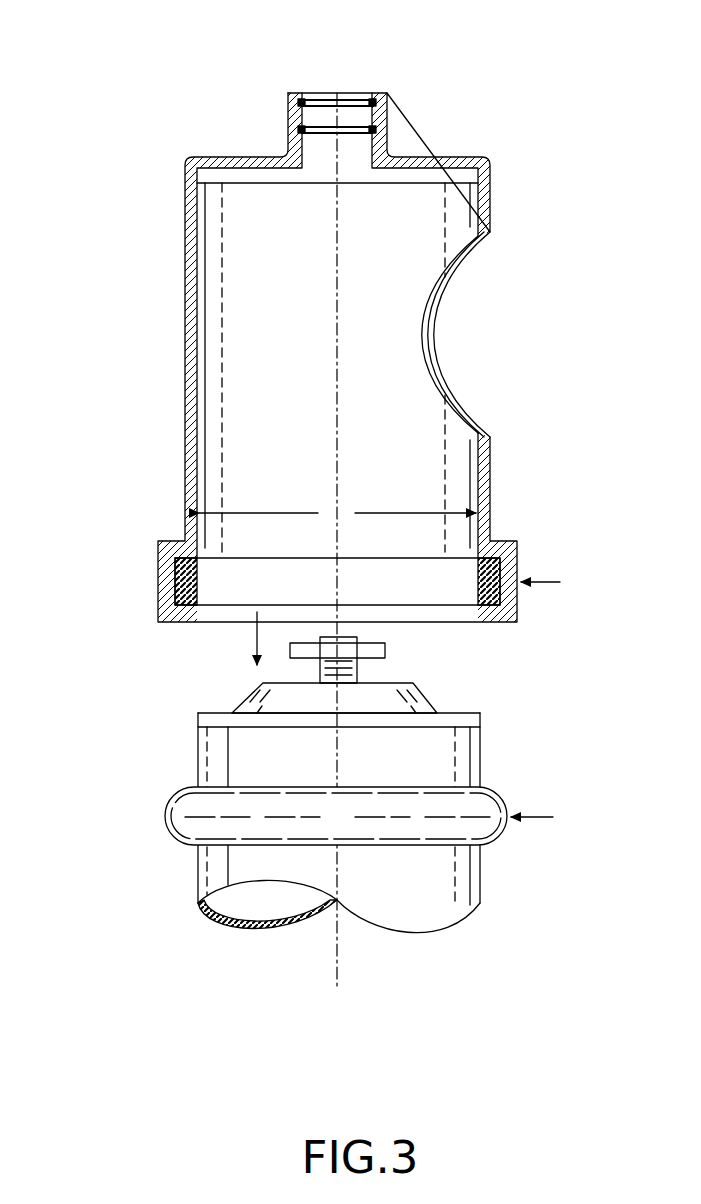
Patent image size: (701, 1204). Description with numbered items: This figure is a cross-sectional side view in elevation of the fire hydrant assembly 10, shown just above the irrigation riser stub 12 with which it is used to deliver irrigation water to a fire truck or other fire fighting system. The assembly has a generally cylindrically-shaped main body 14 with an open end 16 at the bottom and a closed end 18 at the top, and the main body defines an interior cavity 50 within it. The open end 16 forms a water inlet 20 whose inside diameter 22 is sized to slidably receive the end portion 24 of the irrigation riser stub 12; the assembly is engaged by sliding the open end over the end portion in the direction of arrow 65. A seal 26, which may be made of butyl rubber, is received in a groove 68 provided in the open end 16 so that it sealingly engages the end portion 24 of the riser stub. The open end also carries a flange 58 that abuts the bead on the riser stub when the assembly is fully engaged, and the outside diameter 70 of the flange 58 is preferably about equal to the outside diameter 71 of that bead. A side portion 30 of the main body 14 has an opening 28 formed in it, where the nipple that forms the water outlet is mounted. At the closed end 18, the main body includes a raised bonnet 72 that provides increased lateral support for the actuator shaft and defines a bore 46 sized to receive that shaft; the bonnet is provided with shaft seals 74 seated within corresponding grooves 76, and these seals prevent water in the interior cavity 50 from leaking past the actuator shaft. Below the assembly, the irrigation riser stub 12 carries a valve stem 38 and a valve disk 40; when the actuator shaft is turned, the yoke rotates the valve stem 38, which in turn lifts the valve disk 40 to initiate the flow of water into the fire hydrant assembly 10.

The fire hydrant assembly 10 is at (321, 528).
The irrigation riser stub 12 is at (255, 934).
The main body 14 is at (185, 268).
The open end 16 is at (517, 615).
The closed end 18 is at (236, 157).
The water inlet 20 is at (220, 625).
The inside diameter 22 is at (337, 513).
The end portion 24 is at (481, 757).
The seal 26 is at (478, 580).
The opening 28 is at (438, 335).
The side portion 30 is at (483, 213).
The valve stem 38 is at (385, 650).
The valve disk 40 is at (427, 698).
The bore 46 is at (366, 162).
The interior cavity 50 is at (337, 362).
The flange 58 is at (178, 541).
The arrow 65 is at (254, 641).
The groove 68 is at (503, 565).
The outside diameter 70 is at (154, 582).
The outside diameter 71 is at (161, 817).
The raised bonnet 72 is at (389, 130).
The shaft seals 74 is at (303, 103).
The grooves 76 is at (373, 130).